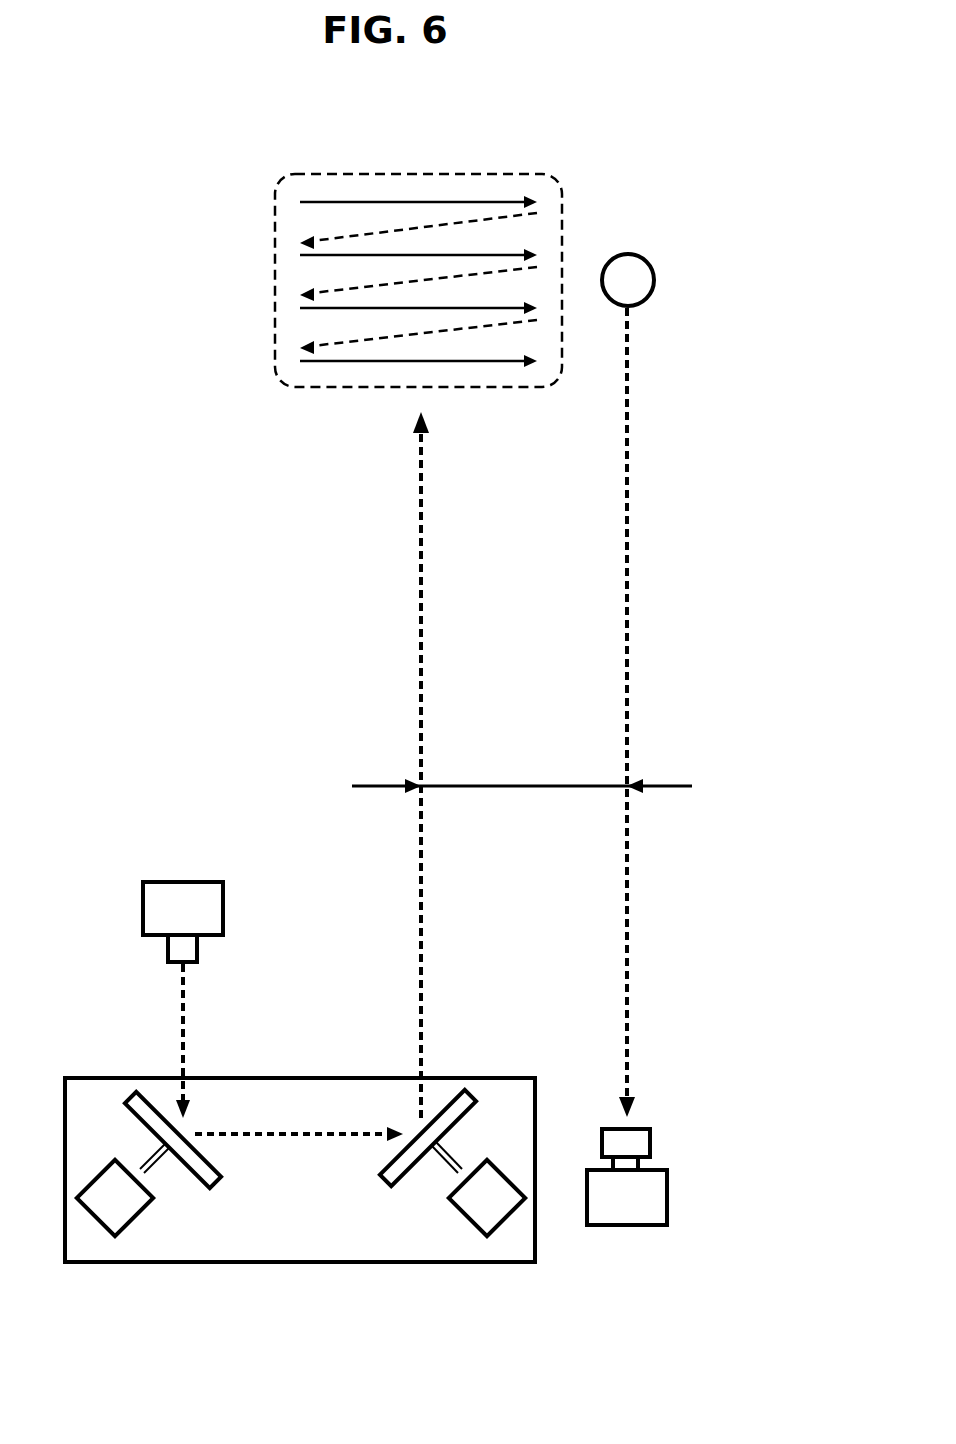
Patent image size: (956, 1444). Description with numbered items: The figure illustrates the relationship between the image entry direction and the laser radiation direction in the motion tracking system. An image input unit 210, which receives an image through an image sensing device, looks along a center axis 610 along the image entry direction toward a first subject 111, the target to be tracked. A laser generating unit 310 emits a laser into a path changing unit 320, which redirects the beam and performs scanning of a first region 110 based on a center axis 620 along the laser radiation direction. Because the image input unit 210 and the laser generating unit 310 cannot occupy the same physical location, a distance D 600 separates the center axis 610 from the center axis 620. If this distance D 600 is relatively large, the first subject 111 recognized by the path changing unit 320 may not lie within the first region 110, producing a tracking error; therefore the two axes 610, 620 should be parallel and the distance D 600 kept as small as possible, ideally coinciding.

The first region 110 is at (411, 174).
The first subject 111 is at (618, 253).
The center axis along the laser radiation direction 620 is at (418, 632).
The center axis along the image entry direction 610 is at (628, 632).
The distance D 600 is at (545, 905).
The laser generating unit 310 is at (143, 905).
The path changing unit 320 is at (297, 1262).
The image input unit 210 is at (627, 1225).